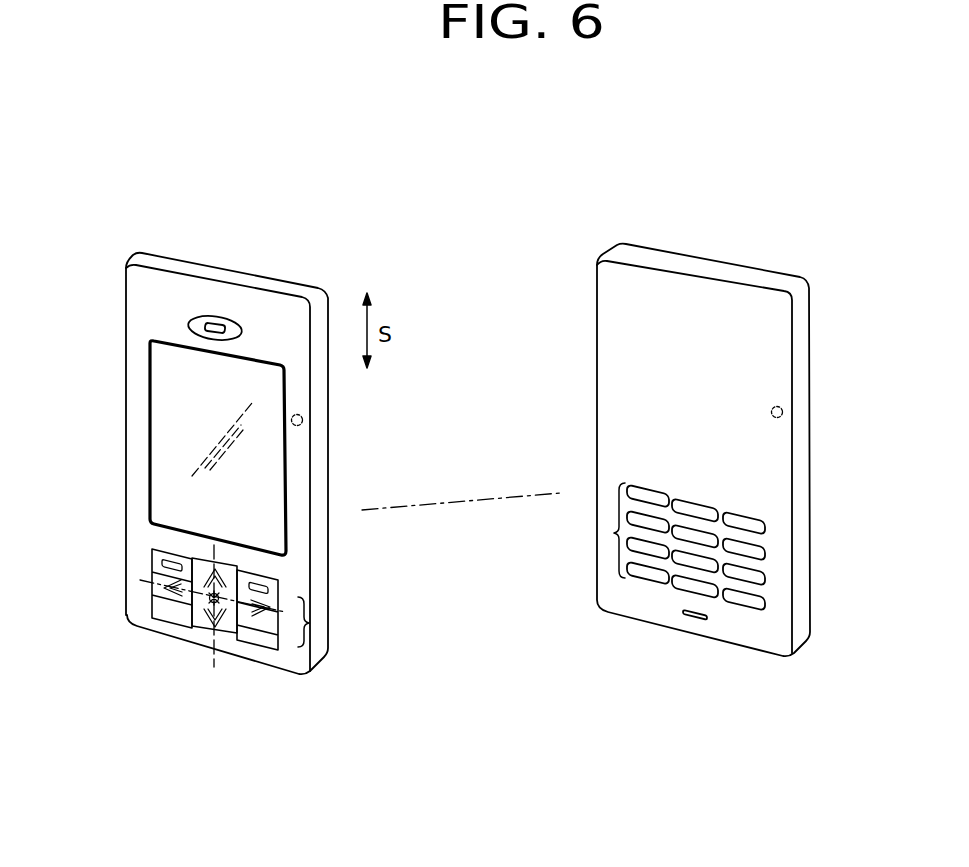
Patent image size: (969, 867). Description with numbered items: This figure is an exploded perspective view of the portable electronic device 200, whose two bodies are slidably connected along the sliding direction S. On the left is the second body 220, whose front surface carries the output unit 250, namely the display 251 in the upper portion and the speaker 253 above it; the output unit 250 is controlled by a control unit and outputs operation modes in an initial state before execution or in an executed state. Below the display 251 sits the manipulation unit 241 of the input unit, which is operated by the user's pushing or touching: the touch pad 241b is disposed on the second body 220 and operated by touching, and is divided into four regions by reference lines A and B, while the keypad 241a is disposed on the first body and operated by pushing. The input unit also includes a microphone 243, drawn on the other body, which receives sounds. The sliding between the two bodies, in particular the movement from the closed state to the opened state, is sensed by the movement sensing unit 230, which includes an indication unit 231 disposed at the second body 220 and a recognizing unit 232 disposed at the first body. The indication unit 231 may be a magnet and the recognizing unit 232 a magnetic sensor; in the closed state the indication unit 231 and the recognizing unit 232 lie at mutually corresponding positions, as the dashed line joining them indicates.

The portable electronic device 200 is at (140, 176).
The second body 220 is at (137, 540).
The speaker 253 is at (187, 323).
The display 251 is at (158, 375).
The manipulation unit 241 is at (378, 615).
The keypad 241a is at (617, 533).
The touch pad 241b is at (309, 623).
The output unit 250 is at (607, 309).
The microphone 243 is at (707, 617).
The movement sensing unit 230 is at (537, 445).
The indication unit 231 is at (303, 420).
The recognizing unit 232 is at (771, 412).